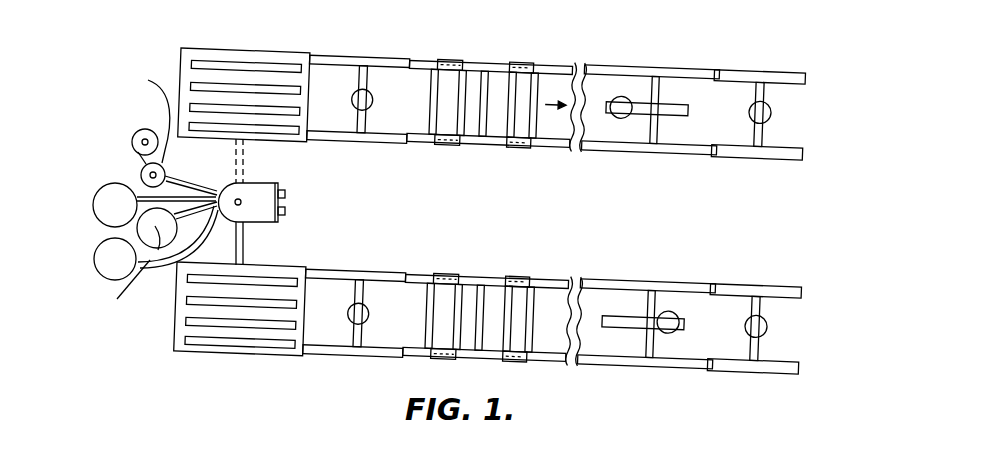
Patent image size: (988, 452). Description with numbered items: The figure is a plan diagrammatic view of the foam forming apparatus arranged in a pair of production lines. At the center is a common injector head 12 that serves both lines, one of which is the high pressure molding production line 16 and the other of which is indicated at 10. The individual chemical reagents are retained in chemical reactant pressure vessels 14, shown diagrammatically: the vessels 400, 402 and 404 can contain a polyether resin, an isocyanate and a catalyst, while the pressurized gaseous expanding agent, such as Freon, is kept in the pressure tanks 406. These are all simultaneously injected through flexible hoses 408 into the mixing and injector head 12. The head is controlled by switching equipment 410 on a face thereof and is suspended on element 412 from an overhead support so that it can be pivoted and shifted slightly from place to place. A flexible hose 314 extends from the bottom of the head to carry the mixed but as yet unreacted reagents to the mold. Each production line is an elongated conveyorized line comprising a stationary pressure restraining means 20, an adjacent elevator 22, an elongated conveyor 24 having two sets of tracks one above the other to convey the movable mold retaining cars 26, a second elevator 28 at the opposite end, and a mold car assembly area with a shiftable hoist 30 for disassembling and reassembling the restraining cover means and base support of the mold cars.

The lower conveyor frame 10 is at (488, 301).
The injector head 12 is at (255, 198).
The chemical reactant pressure vessels 14 is at (128, 196).
The high pressure molding production line 16 is at (415, 58).
The pressure restraining means 20 is at (244, 79).
The elevator 22 is at (358, 80).
The elongated conveyor 24 is at (651, 92).
The mold retaining cars 26 is at (495, 76).
The second elevator 28 is at (760, 98).
The shiftable hoist 30 is at (671, 73).
The flexible hose 314 is at (243, 248).
The vessel 400 is at (110, 255).
The vessel 402 is at (117, 202).
The vessel 404 is at (154, 266).
The pressure tanks 406 is at (140, 127).
The flexible hoses 408 is at (215, 196).
The switching equipment 410 is at (287, 211).
The element 412 is at (240, 200).